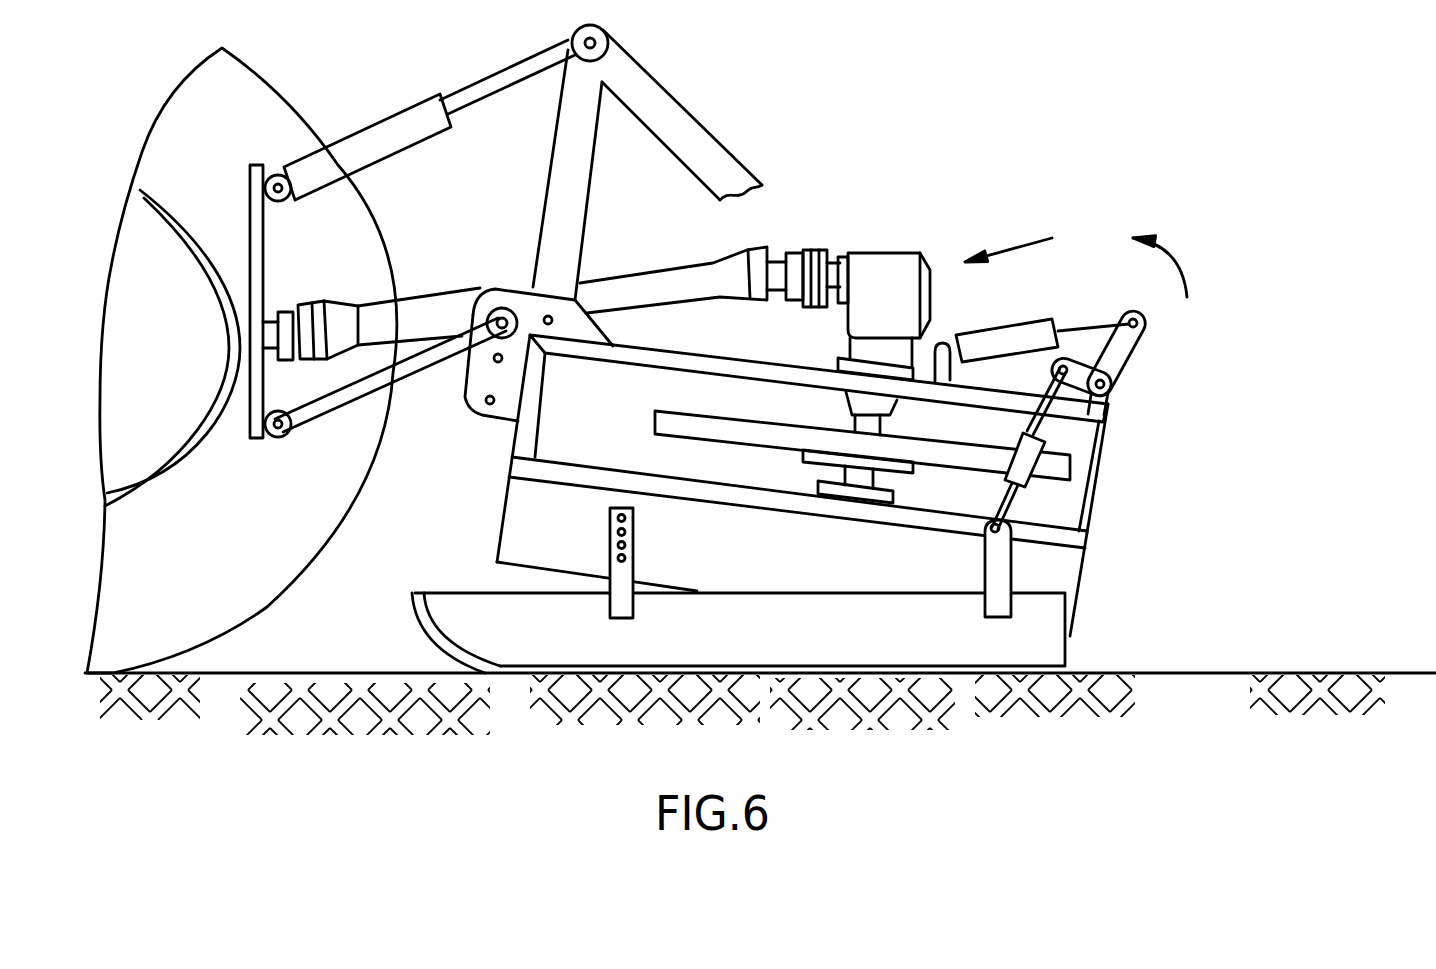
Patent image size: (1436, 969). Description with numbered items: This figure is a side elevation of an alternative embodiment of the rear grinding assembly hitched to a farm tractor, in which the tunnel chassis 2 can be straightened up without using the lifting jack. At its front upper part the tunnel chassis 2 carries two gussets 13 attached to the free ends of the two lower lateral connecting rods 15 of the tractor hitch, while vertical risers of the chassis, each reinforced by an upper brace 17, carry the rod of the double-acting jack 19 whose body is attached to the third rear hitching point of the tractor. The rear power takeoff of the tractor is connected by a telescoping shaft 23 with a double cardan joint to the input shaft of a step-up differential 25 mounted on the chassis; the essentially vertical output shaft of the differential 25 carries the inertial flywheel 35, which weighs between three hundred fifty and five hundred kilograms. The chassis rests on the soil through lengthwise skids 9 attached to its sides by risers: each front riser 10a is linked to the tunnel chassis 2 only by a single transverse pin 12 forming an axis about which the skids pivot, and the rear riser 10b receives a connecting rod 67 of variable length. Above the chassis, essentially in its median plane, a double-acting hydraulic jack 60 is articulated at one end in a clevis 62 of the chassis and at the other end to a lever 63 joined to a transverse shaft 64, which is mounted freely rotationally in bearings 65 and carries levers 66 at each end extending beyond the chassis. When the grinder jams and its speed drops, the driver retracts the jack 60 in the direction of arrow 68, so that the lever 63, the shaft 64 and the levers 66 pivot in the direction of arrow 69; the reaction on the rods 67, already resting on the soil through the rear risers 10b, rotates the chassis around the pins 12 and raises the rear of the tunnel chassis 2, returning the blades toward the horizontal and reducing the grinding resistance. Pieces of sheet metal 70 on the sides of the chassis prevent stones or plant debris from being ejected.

The tunnel chassis 2 is at (1080, 533).
The lengthwise skid 9 is at (448, 590).
The front riser 10a is at (635, 582).
The rear riser 10b is at (988, 565).
The transverse pin 12 is at (610, 540).
The gusset 13 is at (472, 372).
The lower lateral connecting rod 15 is at (330, 405).
The upper brace 17 is at (688, 122).
The double-acting jack 19 is at (380, 145).
The telescoping shaft 23 is at (422, 317).
The differential 25 is at (887, 262).
The inertial flywheel 35 is at (657, 420).
The double-acting hydraulic jack 60 is at (1018, 338).
The clevis 62 is at (950, 372).
The lever 63 is at (1125, 350).
The transverse shaft 64 is at (1110, 384).
The bearing 65 is at (1105, 400).
The lever 66 is at (1080, 363).
The connecting rod 67 is at (1018, 445).
The arrow 68 is at (1022, 246).
The arrow 69 is at (1172, 254).
The sheet metal piece 70 is at (1073, 587).